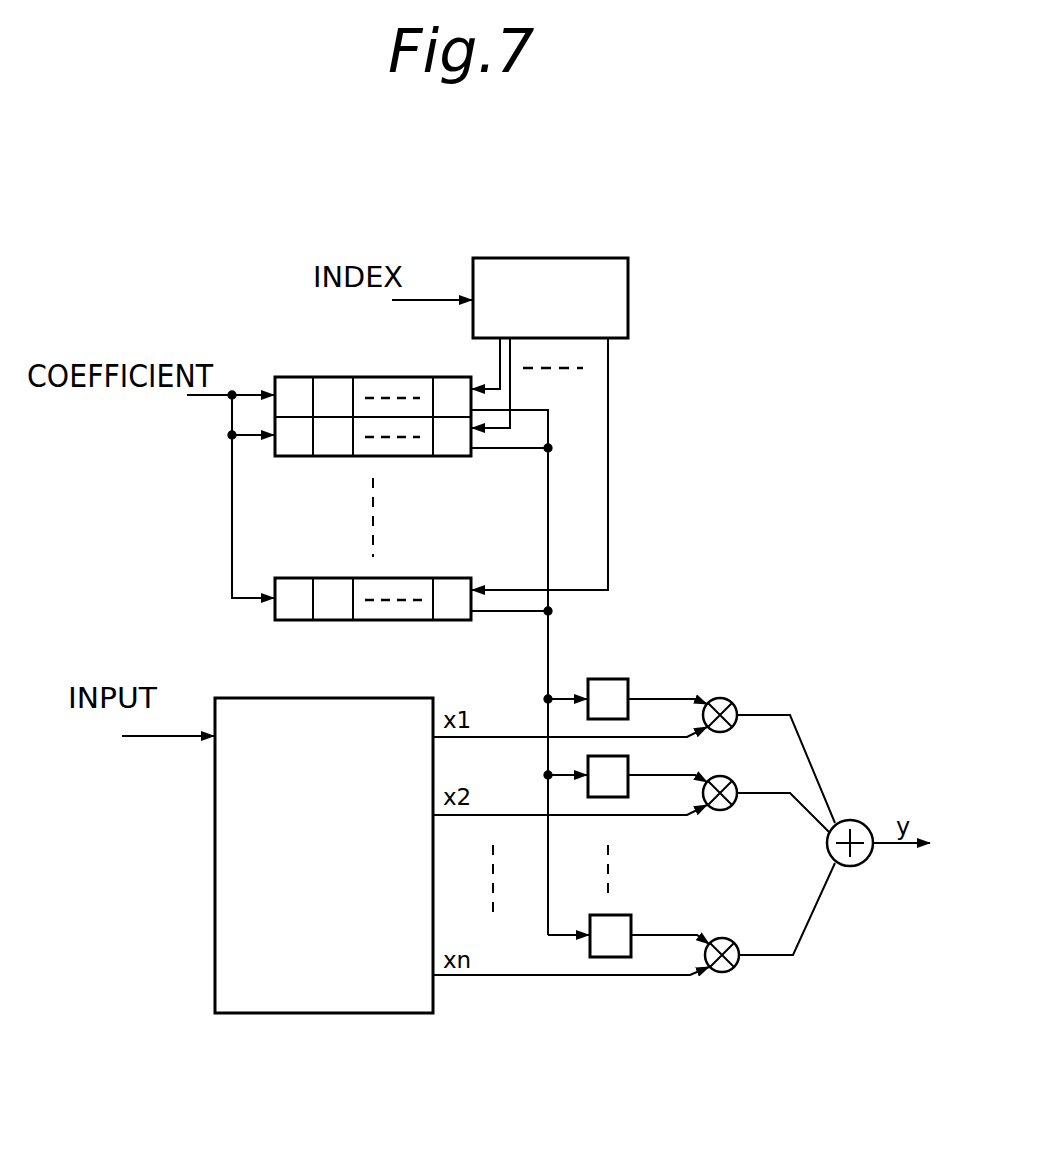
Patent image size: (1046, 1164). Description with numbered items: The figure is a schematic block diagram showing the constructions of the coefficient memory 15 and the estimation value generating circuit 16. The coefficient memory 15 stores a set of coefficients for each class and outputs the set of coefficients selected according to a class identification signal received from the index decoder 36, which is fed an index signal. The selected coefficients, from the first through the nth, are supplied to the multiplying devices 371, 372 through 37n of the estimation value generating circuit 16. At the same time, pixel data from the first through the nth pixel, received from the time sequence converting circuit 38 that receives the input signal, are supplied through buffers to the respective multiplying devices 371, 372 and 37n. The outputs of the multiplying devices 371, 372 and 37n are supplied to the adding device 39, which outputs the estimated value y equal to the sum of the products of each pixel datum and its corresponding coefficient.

The coefficient memory 15 is at (683, 467).
The estimation value generating circuit 16 is at (748, 626).
The index decoder 36 is at (628, 295).
The time sequence converting circuit 38 is at (215, 925).
The multiplying device 371 is at (738, 702).
The multiplying device 372 is at (752, 770).
The multiplying device 37n is at (735, 940).
The adding device 39 is at (862, 864).